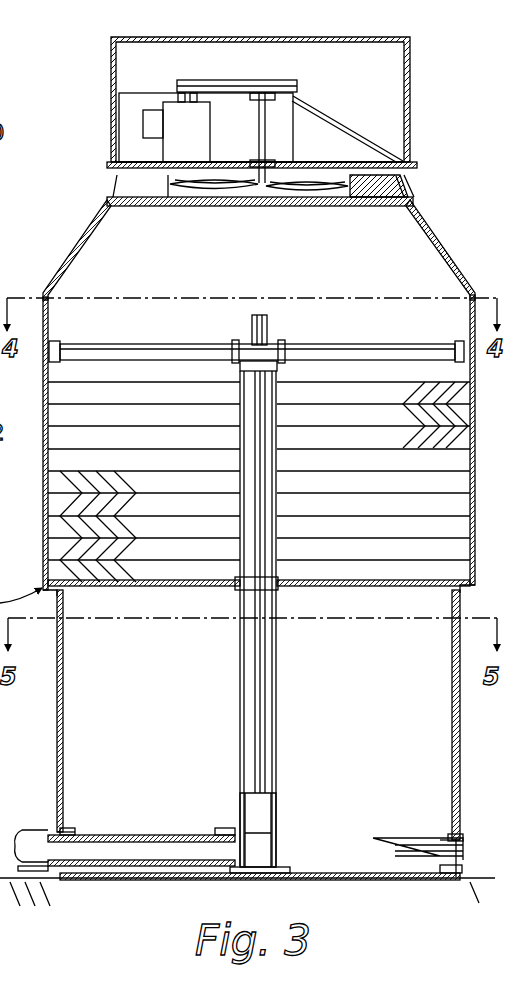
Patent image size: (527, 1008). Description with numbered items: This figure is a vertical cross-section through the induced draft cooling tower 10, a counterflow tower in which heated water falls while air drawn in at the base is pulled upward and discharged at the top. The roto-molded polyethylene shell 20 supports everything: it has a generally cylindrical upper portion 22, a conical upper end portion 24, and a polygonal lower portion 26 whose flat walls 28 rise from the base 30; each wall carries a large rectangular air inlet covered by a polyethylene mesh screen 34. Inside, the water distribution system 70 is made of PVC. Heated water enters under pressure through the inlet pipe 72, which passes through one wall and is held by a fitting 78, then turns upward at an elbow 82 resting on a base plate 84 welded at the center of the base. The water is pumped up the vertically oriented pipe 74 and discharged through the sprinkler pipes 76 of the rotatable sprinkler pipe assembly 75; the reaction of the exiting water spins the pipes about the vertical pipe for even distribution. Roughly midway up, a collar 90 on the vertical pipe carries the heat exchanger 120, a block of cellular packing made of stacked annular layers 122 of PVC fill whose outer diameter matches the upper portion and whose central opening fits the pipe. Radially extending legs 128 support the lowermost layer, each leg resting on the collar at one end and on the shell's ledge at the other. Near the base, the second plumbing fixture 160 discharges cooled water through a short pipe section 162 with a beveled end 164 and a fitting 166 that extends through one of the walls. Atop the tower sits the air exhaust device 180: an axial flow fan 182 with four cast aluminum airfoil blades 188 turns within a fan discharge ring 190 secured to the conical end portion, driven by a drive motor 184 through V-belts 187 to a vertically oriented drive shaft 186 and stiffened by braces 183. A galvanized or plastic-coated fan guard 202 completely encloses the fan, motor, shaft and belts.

The induced draft cooling tower 10 is at (436, 124).
The shell 20 is at (438, 217).
The cylindrical upper portion 22 is at (476, 393).
The conical upper end portion 24 is at (88, 232).
The polygonal lower portion 26 is at (255, 733).
The flat walls 28 is at (58, 814).
The base 30 is at (353, 881).
The mesh screen 34 is at (63, 682).
The water distribution system 70 is at (256, 313).
The inlet pipe 72 is at (130, 835).
The vertically oriented pipe 74 is at (273, 689).
The rotatable sprinkler pipe assembly 75 is at (301, 340).
The sprinkler pipes 76 is at (134, 345).
The fitting 78 is at (68, 830).
The elbow 82 is at (228, 830).
The base plate 84 is at (285, 867).
The collar 90 is at (278, 588).
The heat exchanger 120 is at (279, 446).
The layers 122 is at (458, 487).
The radially extending legs 128 is at (178, 583).
The second plumbing fixture 160 is at (425, 813).
The pipe section 162 is at (412, 838).
The beveled end 164 is at (395, 844).
The fitting 166 is at (463, 841).
The air exhaust device 180 is at (96, 73).
The fan 182 is at (287, 167).
The braces 183 is at (338, 126).
The drive motor 184 is at (172, 108).
The drive shaft 186 is at (258, 136).
The V-belts 187 is at (226, 79).
The airfoil blades 188 is at (217, 189).
The fan discharge ring 190 is at (406, 187).
The fan guard 202 is at (412, 56).